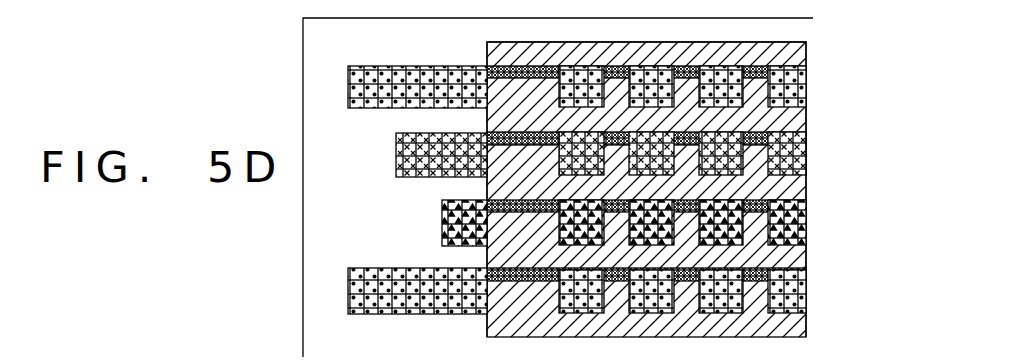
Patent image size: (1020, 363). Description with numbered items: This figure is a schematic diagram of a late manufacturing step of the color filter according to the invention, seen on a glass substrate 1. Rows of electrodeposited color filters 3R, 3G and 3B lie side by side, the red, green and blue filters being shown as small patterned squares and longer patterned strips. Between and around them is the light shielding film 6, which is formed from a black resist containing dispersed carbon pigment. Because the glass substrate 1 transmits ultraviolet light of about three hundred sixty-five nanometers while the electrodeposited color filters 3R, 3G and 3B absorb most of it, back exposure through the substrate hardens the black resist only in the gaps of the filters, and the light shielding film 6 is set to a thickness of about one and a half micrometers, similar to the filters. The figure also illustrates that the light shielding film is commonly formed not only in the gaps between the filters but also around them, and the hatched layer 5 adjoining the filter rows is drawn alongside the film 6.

The glass substrate 1 is at (797, 28).
The light shielding film 6 is at (805, 50).
The light shielding layer 5 is at (795, 120).
The electrodeposited color filter 3R is at (808, 92).
The electrodeposited color filter 3G is at (808, 143).
The electrodeposited color filter 3B is at (808, 225).